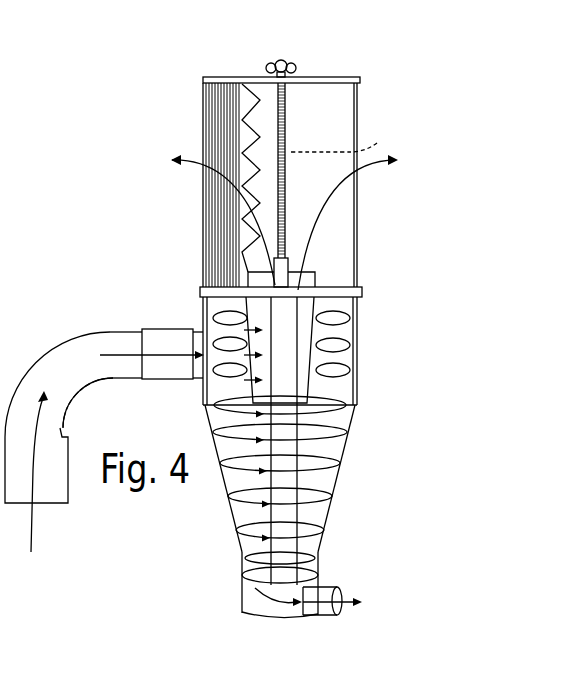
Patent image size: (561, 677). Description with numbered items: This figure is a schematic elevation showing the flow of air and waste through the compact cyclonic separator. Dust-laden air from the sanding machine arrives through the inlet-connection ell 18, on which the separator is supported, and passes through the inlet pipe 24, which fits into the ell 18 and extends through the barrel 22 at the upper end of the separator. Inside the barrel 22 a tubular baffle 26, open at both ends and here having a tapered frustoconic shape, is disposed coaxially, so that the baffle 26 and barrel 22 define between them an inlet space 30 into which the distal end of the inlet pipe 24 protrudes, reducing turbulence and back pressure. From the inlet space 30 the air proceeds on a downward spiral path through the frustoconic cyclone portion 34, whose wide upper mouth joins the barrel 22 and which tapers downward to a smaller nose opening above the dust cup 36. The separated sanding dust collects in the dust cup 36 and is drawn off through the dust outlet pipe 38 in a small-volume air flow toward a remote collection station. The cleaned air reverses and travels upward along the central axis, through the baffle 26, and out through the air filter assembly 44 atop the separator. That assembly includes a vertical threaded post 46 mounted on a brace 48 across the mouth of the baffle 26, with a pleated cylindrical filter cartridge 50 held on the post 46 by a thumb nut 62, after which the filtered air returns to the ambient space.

The inlet-connection ell 18 is at (40, 375).
The barrel 22 is at (356, 348).
The inlet pipe 24 is at (163, 330).
The tubular baffle 26 is at (313, 388).
The inlet space 30 is at (343, 336).
The frustoconic cyclone portion 34 is at (336, 492).
The dust cup 36 is at (242, 607).
The dust outlet pipe 38 is at (323, 583).
The air filter assembly 44 is at (190, 285).
The vertical threaded post 46 is at (353, 198).
The brace 48 is at (362, 288).
The pleated cylindrical filter cartridge 50 is at (203, 143).
The thumb nut 62 is at (283, 60).